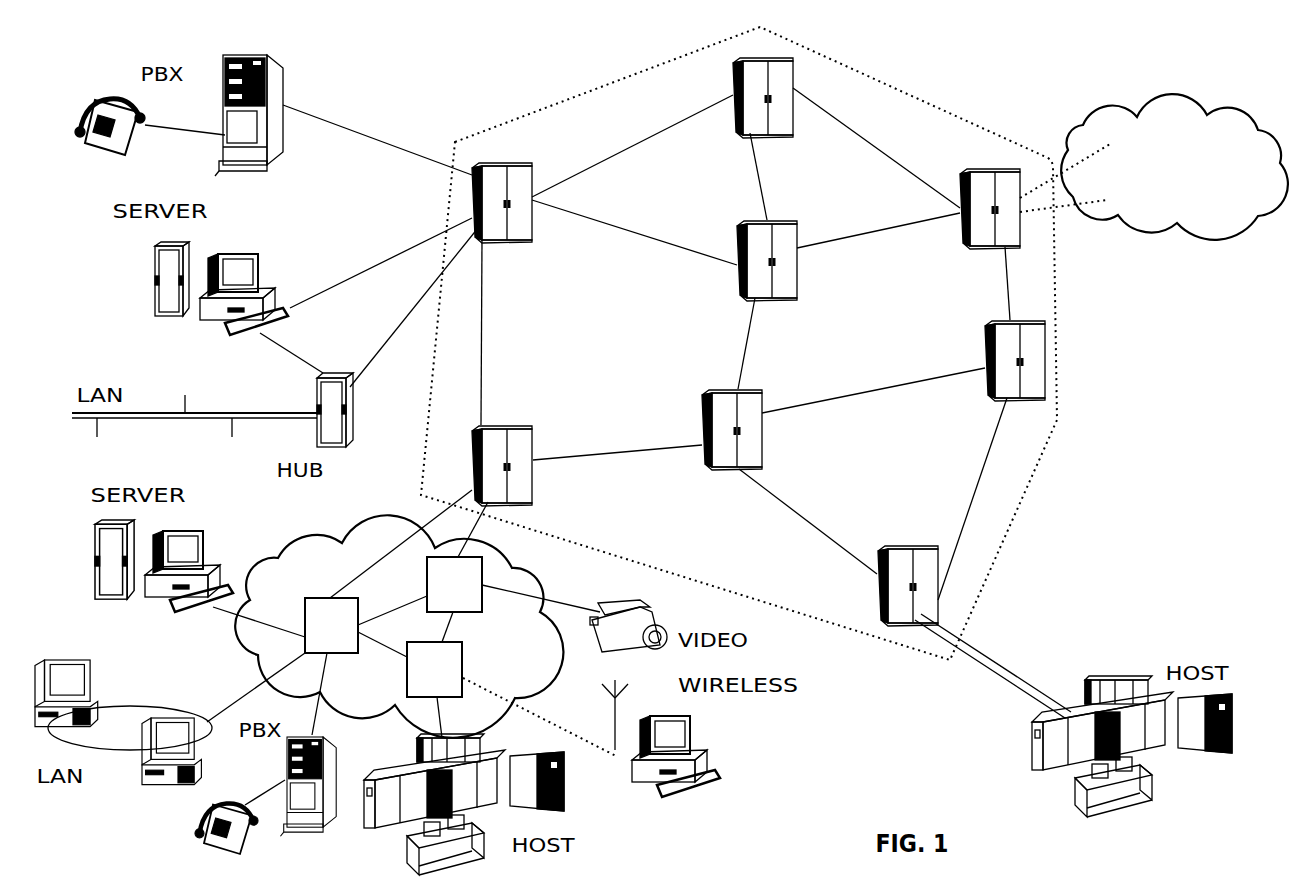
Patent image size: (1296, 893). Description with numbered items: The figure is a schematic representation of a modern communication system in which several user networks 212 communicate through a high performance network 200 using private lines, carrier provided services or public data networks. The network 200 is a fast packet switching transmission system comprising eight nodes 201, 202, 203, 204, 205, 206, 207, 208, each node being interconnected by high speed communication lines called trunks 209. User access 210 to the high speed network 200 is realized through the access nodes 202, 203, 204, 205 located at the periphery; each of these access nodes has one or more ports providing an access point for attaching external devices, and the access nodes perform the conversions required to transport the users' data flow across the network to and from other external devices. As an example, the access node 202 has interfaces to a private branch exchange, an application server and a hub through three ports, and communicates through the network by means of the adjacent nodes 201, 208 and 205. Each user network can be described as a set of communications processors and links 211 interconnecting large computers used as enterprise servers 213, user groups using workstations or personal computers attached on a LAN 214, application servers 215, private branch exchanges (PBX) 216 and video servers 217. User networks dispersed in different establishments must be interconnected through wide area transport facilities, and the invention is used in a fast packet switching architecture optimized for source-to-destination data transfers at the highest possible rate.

The high performance network 200 is at (590, 90).
The network node 201 is at (793, 63).
The access node 202 is at (530, 177).
The access node 203 is at (898, 544).
The access node 204 is at (1017, 168).
The access node 205 is at (532, 433).
The network node 206 is at (762, 405).
The network node 207 is at (1047, 345).
The network node 208 is at (797, 233).
The trunk 209 is at (872, 232).
The user access 210 is at (320, 117).
The communications processors and links 211 is at (278, 560).
The user network 212 is at (1170, 97).
The enterprise server 213 is at (562, 808).
The LAN 214 is at (160, 712).
The application server 215 is at (95, 565).
The private branch exchange (PBX) 216 is at (302, 835).
The video server 217 is at (598, 615).